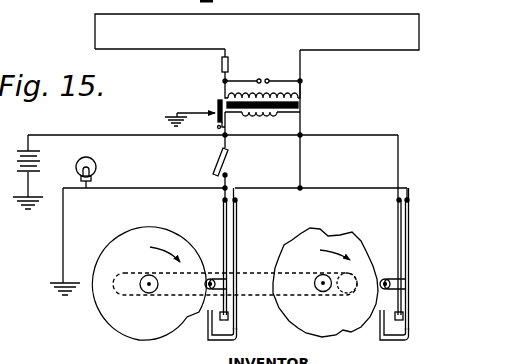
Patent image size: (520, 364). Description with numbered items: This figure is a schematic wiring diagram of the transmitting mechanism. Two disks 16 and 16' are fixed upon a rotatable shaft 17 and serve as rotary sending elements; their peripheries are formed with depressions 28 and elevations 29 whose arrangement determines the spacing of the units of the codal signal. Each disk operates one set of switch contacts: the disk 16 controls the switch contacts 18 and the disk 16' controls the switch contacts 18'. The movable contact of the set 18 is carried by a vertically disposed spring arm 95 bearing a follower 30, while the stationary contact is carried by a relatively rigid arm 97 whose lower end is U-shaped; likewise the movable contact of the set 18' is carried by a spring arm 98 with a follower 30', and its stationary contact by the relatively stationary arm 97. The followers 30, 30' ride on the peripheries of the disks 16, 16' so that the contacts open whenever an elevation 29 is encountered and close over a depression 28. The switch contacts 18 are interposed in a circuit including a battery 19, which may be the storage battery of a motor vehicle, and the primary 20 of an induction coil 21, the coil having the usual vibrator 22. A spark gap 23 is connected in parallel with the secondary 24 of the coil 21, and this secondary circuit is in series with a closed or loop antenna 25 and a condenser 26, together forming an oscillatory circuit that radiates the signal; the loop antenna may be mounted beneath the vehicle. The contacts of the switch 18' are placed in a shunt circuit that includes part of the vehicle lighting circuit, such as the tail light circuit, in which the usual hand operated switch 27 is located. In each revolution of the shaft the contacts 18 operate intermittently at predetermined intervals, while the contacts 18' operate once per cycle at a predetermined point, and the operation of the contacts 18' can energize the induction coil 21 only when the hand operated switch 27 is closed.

The disk 16 is at (325, 292).
The disk 16' is at (149, 291).
The rotatable shaft 17 is at (110, 290).
The switch contacts 18 is at (409, 332).
The switch contacts 18' is at (210, 331).
The battery 19 is at (42, 152).
The primary 20 is at (264, 120).
The induction coil 21 is at (306, 104).
The vibrator 22 is at (216, 103).
The spark gap 23 is at (263, 77).
The secondary 24 is at (276, 94).
The loop antenna 25 is at (300, 15).
The condenser 26 is at (221, 64).
The hand operated switch 27 is at (215, 159).
The peripheral depressions 28 is at (167, 299).
The elevations 29 is at (155, 338).
The follower 30 is at (390, 269).
The follower 30' is at (212, 259).
The spring arm 95 is at (398, 217).
The rigid arm 97 is at (238, 227).
The spring arm 98 is at (222, 211).